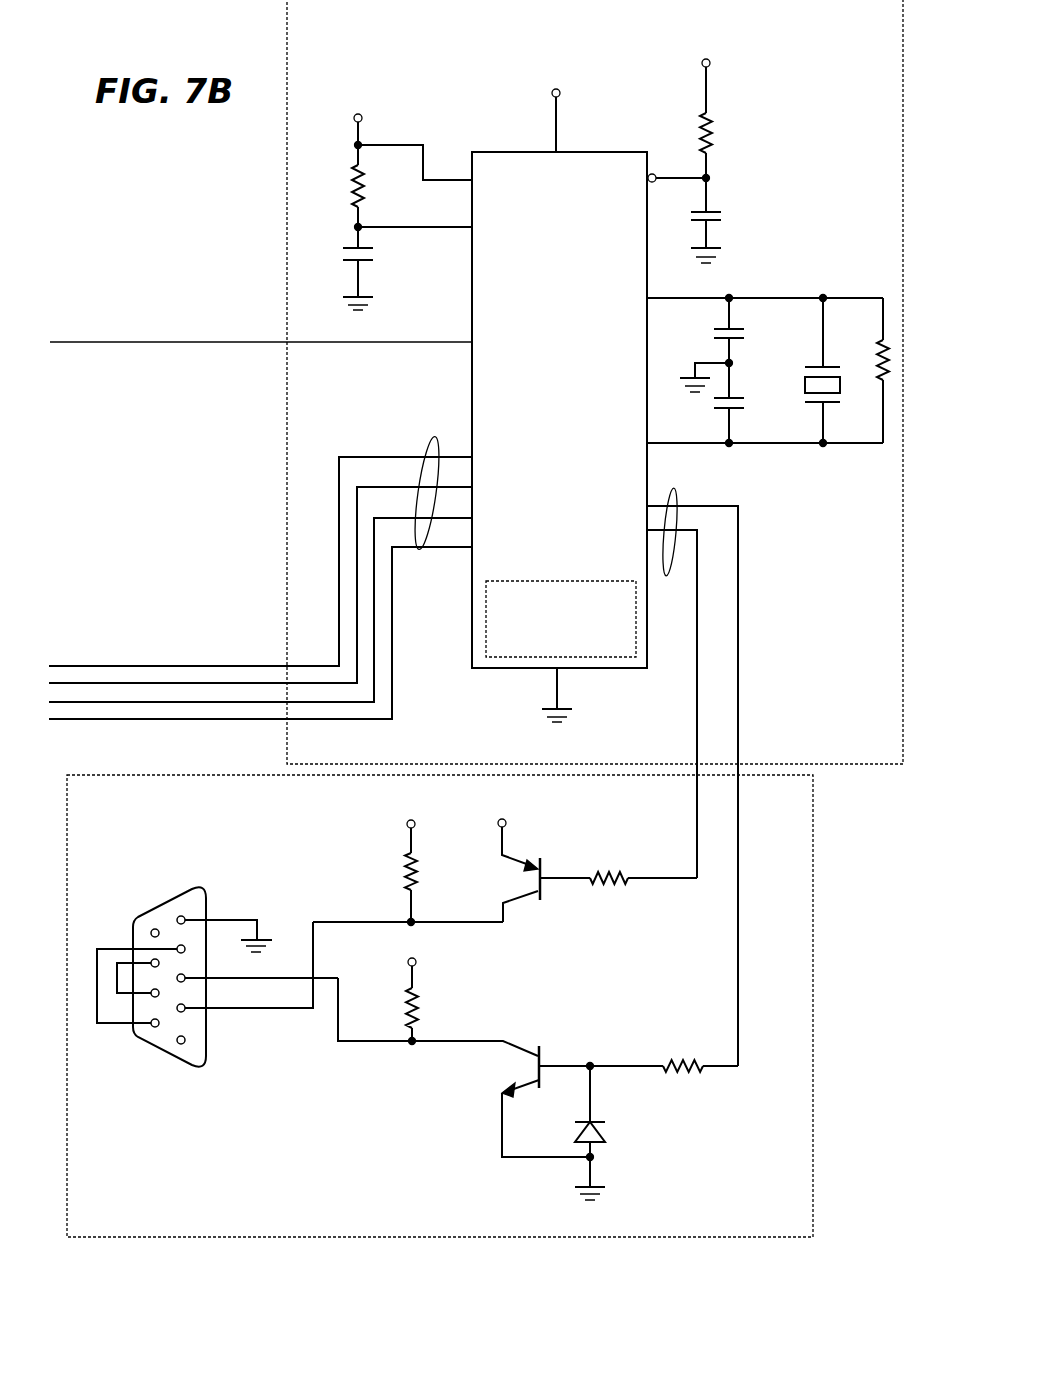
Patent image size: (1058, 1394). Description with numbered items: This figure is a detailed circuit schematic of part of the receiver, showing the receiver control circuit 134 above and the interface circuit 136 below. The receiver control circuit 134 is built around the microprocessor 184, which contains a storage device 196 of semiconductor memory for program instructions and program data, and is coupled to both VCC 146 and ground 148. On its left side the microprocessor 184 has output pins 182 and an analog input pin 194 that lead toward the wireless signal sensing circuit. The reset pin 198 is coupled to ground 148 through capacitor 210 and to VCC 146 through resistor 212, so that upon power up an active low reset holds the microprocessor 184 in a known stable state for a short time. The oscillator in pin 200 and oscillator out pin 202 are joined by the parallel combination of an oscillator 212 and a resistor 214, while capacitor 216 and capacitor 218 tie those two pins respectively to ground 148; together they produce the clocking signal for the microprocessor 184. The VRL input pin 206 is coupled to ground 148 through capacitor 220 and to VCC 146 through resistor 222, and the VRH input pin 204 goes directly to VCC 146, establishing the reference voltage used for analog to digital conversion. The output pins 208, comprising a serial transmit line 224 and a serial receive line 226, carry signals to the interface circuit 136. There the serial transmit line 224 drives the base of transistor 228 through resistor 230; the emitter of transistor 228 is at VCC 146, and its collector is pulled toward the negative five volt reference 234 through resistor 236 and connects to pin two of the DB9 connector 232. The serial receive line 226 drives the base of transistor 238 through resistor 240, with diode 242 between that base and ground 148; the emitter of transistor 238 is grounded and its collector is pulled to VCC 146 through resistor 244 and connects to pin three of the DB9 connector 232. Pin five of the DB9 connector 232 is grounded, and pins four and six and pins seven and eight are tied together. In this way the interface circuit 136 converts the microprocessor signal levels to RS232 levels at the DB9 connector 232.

The receiver control circuit 134 is at (283, 171).
The interface circuit 136 is at (815, 958).
The VCC 146 is at (559, 108).
The ground 148 is at (560, 682).
The output pins 182 is at (432, 552).
The microprocessor 184 is at (512, 152).
The analog input pin 194 is at (338, 345).
The storage device 196 is at (510, 660).
The reset pin 198 is at (680, 177).
The oscillator in pin 200 is at (680, 298).
The oscillator out pin 202 is at (675, 444).
The VRH input pin 204 is at (447, 180).
The VRL input pin 206 is at (445, 228).
The output pins 208 is at (692, 777).
The capacitor 210 is at (716, 211).
The resistor / oscillator 212 is at (710, 112).
The resistor 214 is at (878, 375).
The capacitor 216 is at (738, 330).
The capacitor 218 is at (736, 398).
The capacitor 220 is at (345, 250).
The resistor 222 is at (350, 183).
The serial transmit line 224 is at (690, 880).
The serial receive line 226 is at (736, 1070).
The transistor 228 is at (546, 886).
The resistor 230 is at (613, 885).
The DB9 connector 232 is at (160, 1062).
The -5 volt reference 234 is at (406, 834).
The resistor 236 is at (405, 878).
The transistor 238 is at (543, 1058).
The resistor 240 is at (656, 1062).
The diode 242 is at (605, 1134).
The resistor 244 is at (406, 1000).